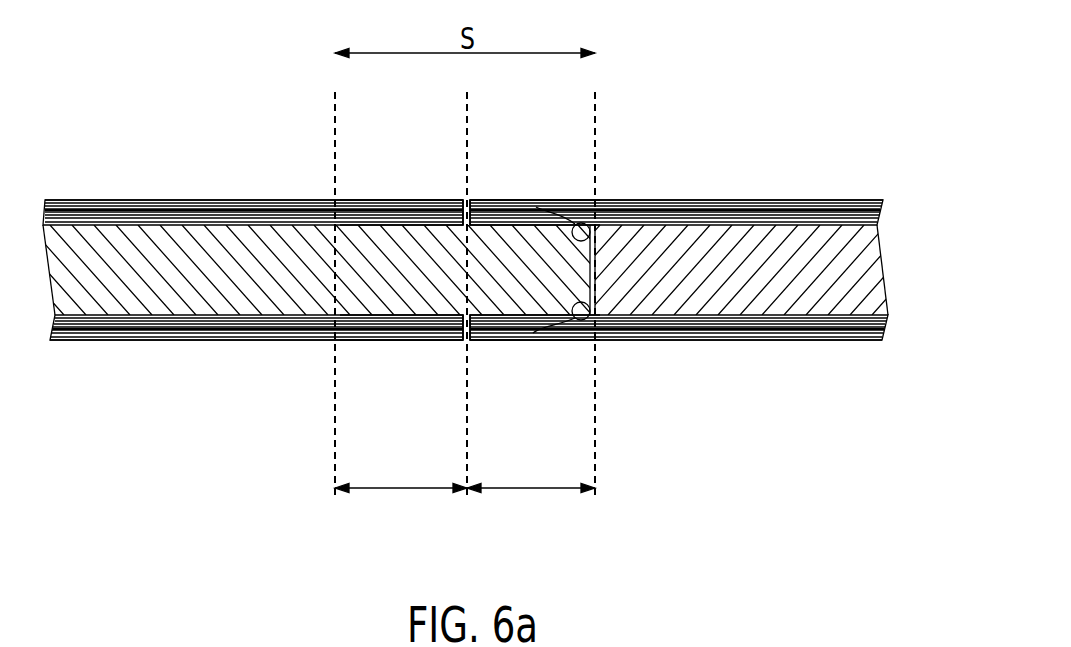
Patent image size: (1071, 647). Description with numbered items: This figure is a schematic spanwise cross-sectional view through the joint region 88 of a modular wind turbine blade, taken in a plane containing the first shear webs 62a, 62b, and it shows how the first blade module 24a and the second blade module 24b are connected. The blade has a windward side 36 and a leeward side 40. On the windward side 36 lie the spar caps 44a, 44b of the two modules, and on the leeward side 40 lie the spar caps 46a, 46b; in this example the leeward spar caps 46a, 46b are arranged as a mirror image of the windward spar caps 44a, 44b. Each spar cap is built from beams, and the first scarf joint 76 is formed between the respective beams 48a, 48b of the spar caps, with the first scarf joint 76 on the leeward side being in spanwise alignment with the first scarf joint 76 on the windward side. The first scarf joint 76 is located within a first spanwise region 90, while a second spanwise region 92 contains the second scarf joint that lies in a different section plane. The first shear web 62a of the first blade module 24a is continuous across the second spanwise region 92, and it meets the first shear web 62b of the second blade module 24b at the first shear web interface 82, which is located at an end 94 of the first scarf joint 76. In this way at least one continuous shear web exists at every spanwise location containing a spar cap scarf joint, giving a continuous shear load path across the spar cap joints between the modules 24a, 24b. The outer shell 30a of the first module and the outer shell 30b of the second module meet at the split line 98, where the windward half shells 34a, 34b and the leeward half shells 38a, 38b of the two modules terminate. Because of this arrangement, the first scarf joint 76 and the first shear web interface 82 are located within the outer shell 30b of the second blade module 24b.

The first blade module 24a is at (329, 222).
The second blade module 24b is at (722, 232).
The outer shell of the first blade module 30a is at (280, 203).
The outer shell of the second blade module 30b is at (838, 202).
The windward half shell of the first module 34a is at (143, 343).
The windward half shell of the second module 34b is at (725, 343).
The windward side 36 is at (422, 360).
The leeward half shell of the first module 38a is at (226, 200).
The leeward half shell of the second module 38b is at (805, 200).
The leeward side 40 is at (443, 185).
The windward spar cap of the first module 44a is at (95, 330).
The windward spar cap of the second module 44b is at (793, 330).
The leeward spar cap of the first module 46a is at (90, 215).
The leeward spar cap of the second module 46b is at (708, 215).
The beam of the first module spar cap 48a is at (370, 200).
The beam of the second module spar cap 48b is at (640, 215).
The first shear web of the first blade module 62a is at (180, 247).
The first shear web of the second blade module 62b is at (748, 218).
The first scarf joint 76 is at (536, 207).
The first shear web interface 82 is at (597, 272).
The joint region 88 is at (357, 95).
The first spanwise region 90 is at (530, 492).
The second spanwise region 92 is at (400, 492).
The end of the first scarf joint 94 is at (579, 223).
The split line 98 is at (470, 195).